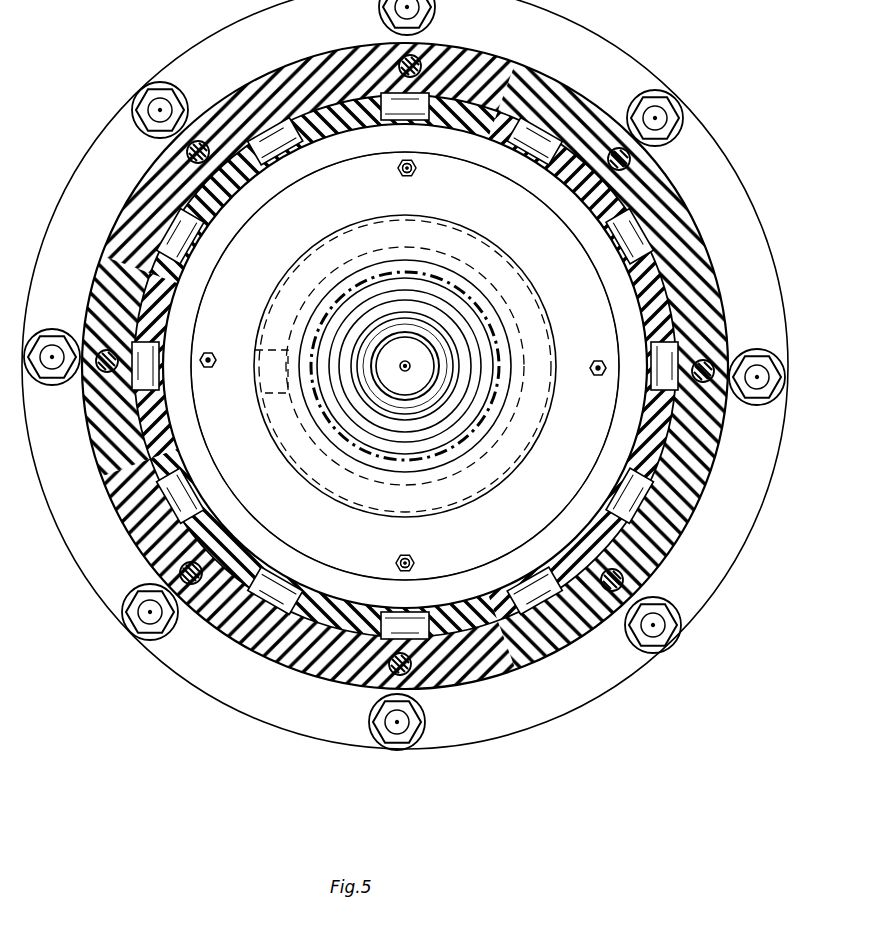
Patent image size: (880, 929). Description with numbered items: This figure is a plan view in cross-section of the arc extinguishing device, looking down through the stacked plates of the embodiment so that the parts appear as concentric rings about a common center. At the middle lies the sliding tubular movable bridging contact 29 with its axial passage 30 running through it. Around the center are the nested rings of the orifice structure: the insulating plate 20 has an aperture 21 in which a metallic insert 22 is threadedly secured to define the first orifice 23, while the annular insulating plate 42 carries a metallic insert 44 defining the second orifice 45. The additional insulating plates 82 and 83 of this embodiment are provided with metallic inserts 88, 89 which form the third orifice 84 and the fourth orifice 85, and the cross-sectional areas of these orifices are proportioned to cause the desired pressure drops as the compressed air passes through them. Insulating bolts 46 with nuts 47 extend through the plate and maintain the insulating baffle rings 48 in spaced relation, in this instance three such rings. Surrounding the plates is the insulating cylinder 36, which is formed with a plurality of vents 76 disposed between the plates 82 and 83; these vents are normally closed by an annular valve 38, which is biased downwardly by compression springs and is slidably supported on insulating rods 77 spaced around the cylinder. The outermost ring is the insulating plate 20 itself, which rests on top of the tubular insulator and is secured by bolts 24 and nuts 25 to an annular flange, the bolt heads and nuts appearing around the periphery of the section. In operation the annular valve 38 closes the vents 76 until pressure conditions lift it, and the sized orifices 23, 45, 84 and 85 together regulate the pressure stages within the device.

The insulating plate 20 is at (610, 683).
The annular valve 38 is at (665, 190).
The insulating cylinder 36 is at (647, 323).
The vents 76 is at (163, 352).
The insulating rods 77 is at (631, 159).
The nuts 25 is at (636, 98).
The bolts 24 is at (644, 113).
The insulating plate 83 is at (188, 298).
The insulating baffle rings 48 is at (225, 258).
The insulating bolts 46 is at (413, 173).
The nuts 47 is at (413, 165).
The fourth orifice 85 is at (298, 330).
The metallic insert 88 is at (300, 352).
The insulating plate 82 is at (333, 300).
The metallic insert 89 is at (468, 440).
The third orifice 84 is at (463, 430).
The annular insulating plate 42 is at (462, 415).
The metallic insert 44 is at (465, 402).
The second orifice 45 is at (458, 393).
The aperture 21 is at (453, 380).
The metallic insert 22 is at (447, 368).
The first orifice 23 is at (440, 362).
The bridging contact 29 is at (432, 352).
The axial passage 30 is at (415, 348).